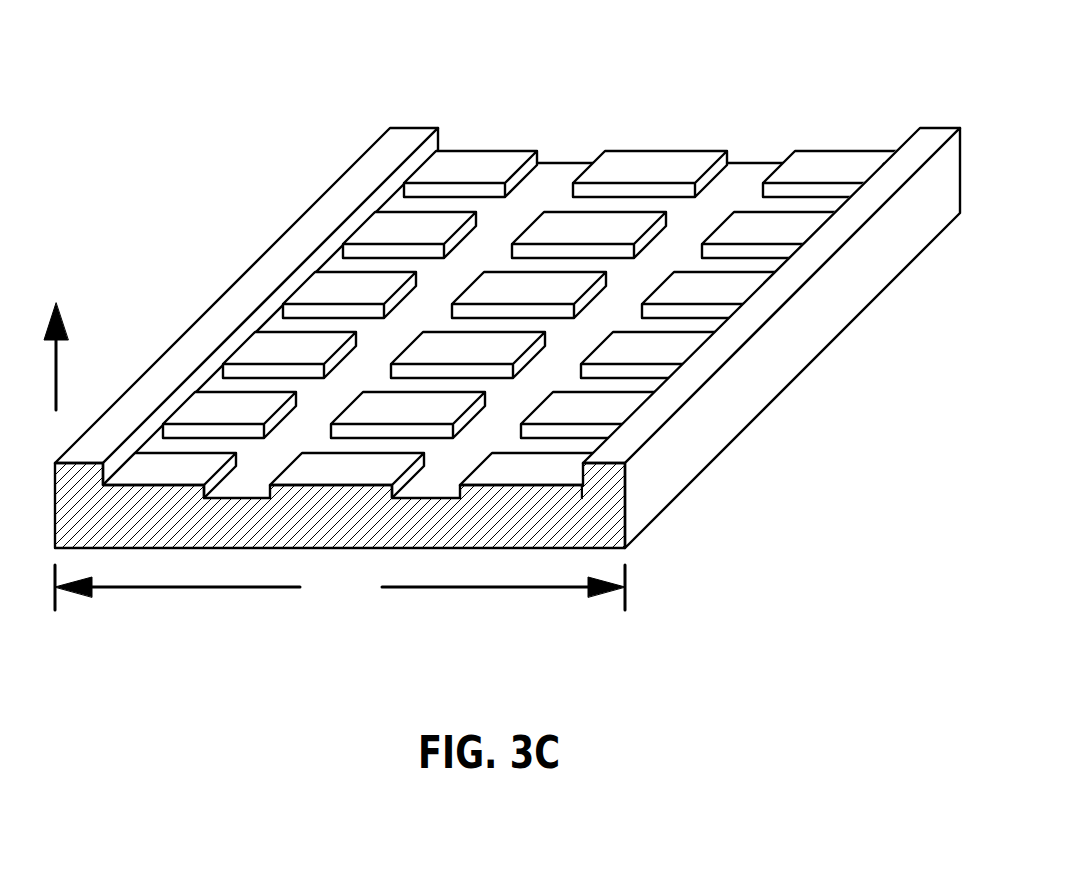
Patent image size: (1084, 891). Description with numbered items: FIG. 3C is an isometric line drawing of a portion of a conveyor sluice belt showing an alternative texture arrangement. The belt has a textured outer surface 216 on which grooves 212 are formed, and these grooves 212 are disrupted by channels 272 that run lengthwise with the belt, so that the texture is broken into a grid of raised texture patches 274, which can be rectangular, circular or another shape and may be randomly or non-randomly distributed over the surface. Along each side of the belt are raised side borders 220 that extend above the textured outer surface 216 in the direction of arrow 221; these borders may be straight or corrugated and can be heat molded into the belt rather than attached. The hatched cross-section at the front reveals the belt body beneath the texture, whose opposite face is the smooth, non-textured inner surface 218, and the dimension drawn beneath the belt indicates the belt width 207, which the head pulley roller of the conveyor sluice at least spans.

The belt width 207 is at (340, 588).
The grooves 212 is at (405, 268).
The textured outer surface 216 is at (502, 108).
The non-textured inner surface 218 is at (687, 487).
The raised side borders 220 is at (919, 140).
The arrow 221 is at (81, 356).
The channels 272 is at (365, 385).
The raised texture patches 274 is at (475, 168).